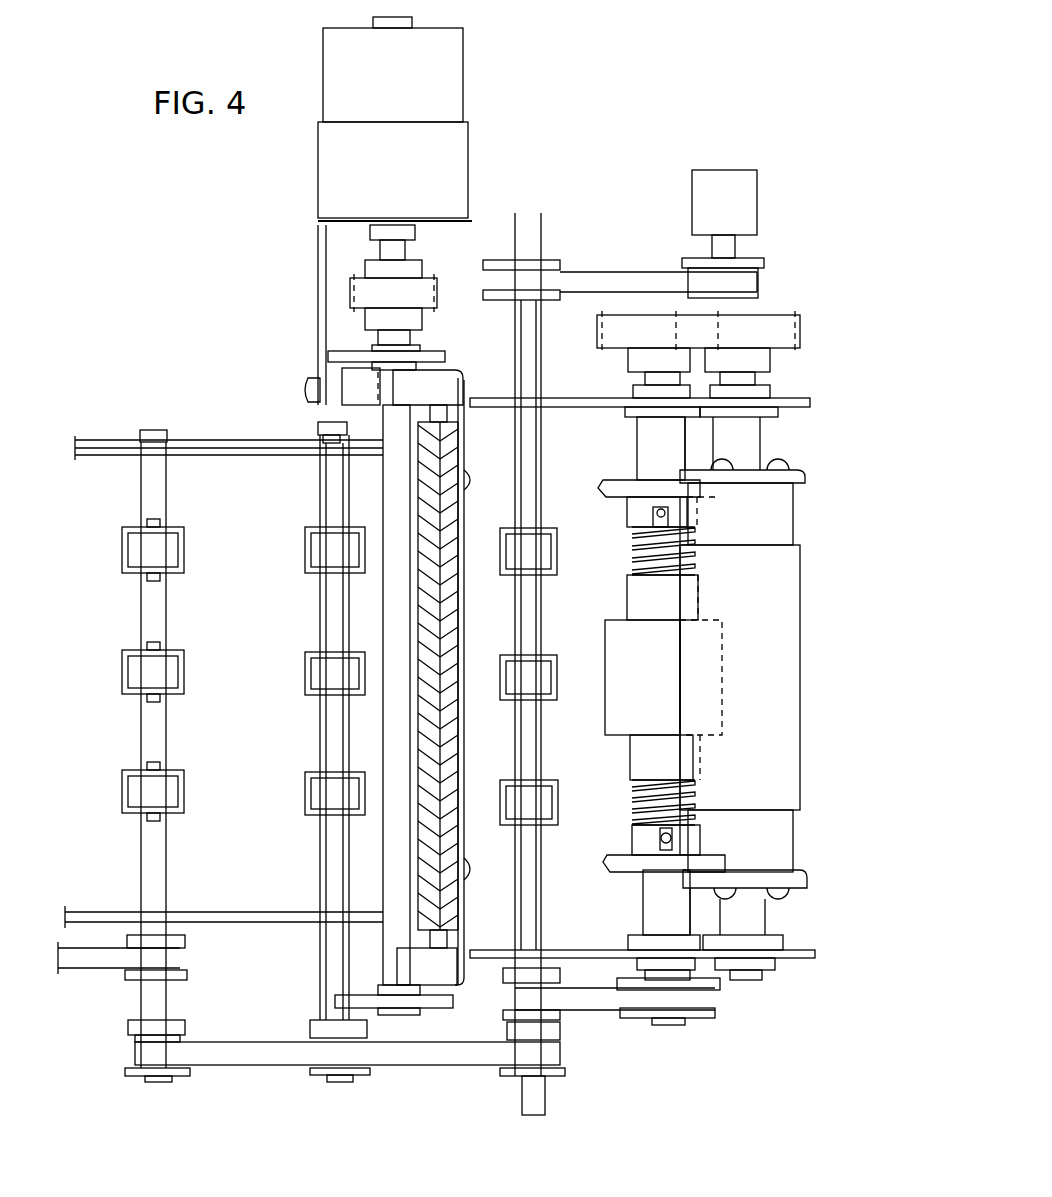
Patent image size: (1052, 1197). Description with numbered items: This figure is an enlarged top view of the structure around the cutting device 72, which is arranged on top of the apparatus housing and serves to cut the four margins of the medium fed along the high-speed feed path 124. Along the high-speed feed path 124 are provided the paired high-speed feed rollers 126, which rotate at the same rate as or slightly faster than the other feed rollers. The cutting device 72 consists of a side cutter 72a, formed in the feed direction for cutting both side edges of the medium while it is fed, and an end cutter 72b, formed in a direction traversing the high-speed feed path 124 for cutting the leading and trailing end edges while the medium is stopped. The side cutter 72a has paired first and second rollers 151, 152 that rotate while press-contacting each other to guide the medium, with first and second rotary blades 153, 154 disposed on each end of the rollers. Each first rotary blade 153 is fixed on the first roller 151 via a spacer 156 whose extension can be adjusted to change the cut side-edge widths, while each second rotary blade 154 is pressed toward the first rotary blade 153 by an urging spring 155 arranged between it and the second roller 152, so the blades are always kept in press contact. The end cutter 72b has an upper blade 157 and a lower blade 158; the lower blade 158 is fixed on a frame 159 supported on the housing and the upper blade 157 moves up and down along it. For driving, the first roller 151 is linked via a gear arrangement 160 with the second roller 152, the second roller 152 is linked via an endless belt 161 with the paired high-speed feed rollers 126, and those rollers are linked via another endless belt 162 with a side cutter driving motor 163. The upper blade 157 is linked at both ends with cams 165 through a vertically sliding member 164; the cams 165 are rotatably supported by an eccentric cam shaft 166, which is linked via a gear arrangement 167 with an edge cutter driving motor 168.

The cutting device 72 is at (653, 1040).
The side cutter 72a is at (807, 762).
The end cutter 72b is at (437, 1013).
The high-speed feed path 124 is at (235, 478).
The paired high-speed feed rollers 126 is at (318, 550).
The first roller 151 is at (793, 693).
The second roller 152 is at (605, 691).
The first rotary blade 153 is at (827, 460).
The second rotary blade 154 is at (613, 488).
The urging spring 155 is at (635, 567).
The spacer 156 is at (776, 520).
The upper blade 157 is at (452, 755).
The lower blade 158 is at (427, 733).
The frame 159 is at (498, 392).
The gear arrangement 160 is at (777, 325).
The endless belt 161 is at (593, 1000).
The endless belt 162 is at (612, 277).
The side cutter driving motor 163 is at (725, 168).
The vertically sliding member 164 is at (443, 373).
The cam 165 is at (345, 348).
The eccentric cam shaft 166 is at (400, 1020).
The gear arrangement 167 is at (415, 300).
The edge cutter driving motor 168 is at (455, 105).